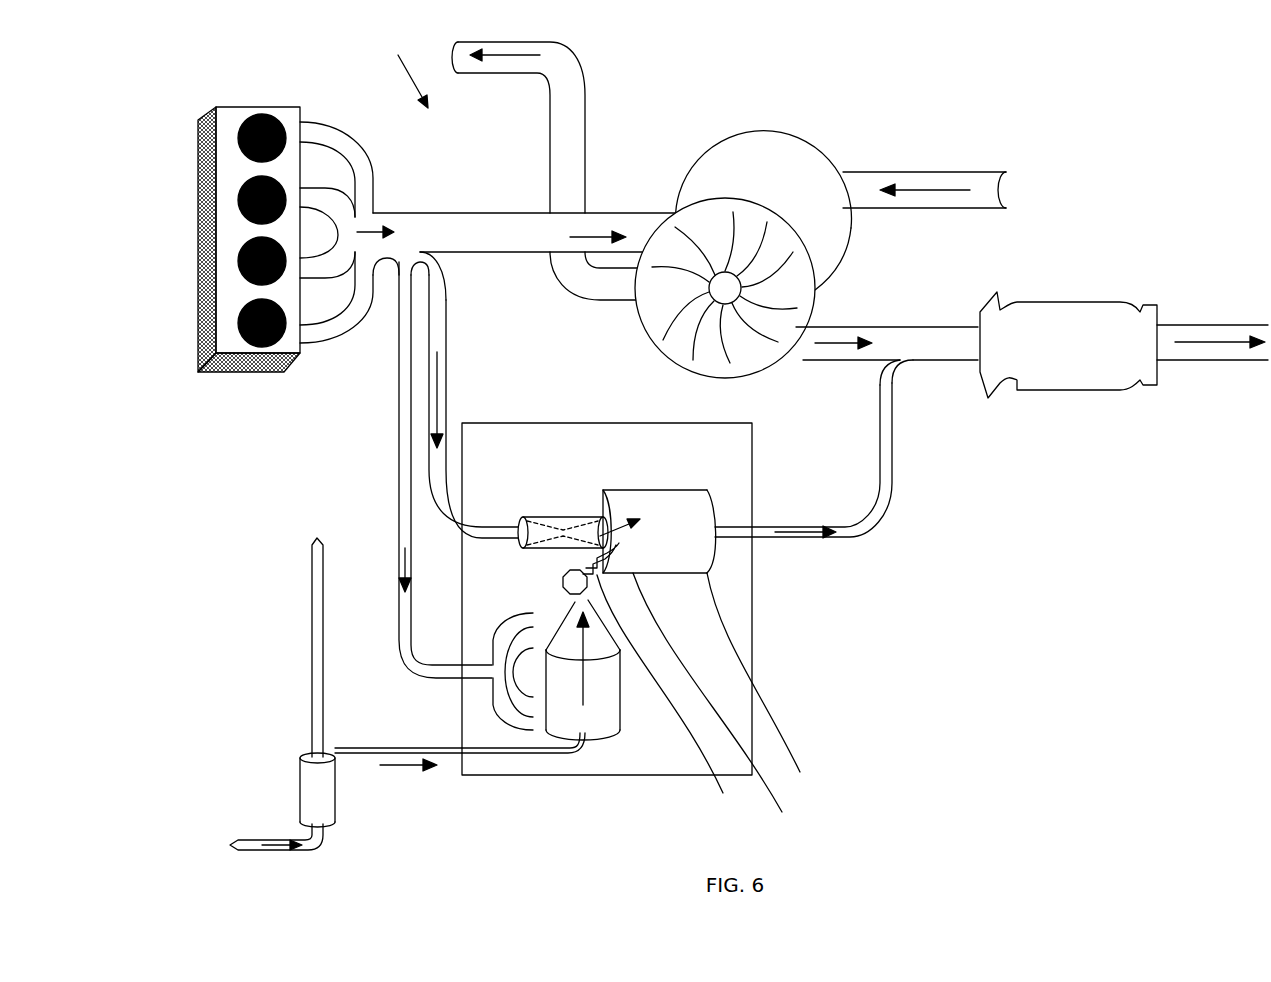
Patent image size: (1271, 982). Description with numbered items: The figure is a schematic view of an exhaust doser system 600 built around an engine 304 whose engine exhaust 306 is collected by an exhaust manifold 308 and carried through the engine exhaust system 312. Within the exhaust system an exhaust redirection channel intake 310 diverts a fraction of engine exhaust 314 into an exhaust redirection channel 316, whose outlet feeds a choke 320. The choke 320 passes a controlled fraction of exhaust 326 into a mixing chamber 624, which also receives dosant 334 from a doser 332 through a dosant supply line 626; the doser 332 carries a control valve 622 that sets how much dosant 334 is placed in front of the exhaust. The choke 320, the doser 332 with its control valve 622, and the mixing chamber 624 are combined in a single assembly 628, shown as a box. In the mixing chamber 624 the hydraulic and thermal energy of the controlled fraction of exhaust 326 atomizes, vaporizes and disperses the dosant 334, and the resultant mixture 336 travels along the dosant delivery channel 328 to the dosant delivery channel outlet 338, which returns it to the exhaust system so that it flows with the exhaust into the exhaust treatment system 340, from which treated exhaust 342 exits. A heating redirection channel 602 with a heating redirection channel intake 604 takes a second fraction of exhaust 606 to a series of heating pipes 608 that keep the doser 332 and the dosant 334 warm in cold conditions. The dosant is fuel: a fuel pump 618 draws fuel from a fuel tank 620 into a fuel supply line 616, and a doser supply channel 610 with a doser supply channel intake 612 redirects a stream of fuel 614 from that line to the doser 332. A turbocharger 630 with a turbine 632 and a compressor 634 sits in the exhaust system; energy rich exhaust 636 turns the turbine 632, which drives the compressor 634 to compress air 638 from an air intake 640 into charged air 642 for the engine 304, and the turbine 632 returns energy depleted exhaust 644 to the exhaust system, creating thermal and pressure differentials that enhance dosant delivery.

The engine 304 is at (253, 374).
The engine exhaust 306 is at (373, 205).
The exhaust manifold 308 is at (333, 347).
The exhaust redirection channel intake 310 is at (418, 262).
The engine exhaust system 312 is at (947, 327).
The fraction of engine exhaust 314 is at (438, 353).
The exhaust redirection channel 316 is at (447, 325).
The choke 320 is at (518, 517).
The controlled fraction of exhaust 326 is at (699, 666).
The dosant delivery channel 328 is at (843, 538).
The doser 332 is at (613, 733).
The dosant 334 is at (580, 706).
The resultant mixture 336 is at (773, 538).
The dosant delivery channel outlet 338 is at (905, 366).
The exhaust treatment system 340 is at (1080, 390).
The treated exhaust 342 is at (1225, 342).
The exhaust doser system 600 is at (395, 70).
The heating redirection channel 602 is at (398, 465).
The heating redirection channel intake 604 is at (399, 265).
The second fraction of exhaust 606 is at (399, 507).
The heating pipes 608 is at (472, 717).
The doser supply channel 610 is at (462, 775).
The doser supply channel intake 612 is at (338, 752).
The stream of fuel 614 is at (393, 764).
The fuel supply line 616 is at (312, 608).
The fuel pump 618 is at (300, 758).
The fuel tank 620 is at (262, 842).
The control valve 622 is at (563, 577).
The mixing chamber 624 is at (769, 685).
The dosant supply line 626 is at (676, 698).
The single assembly 628 is at (590, 479).
The turbocharger 630 is at (749, 188).
The turbine 632 is at (650, 340).
The compressor 634 is at (850, 240).
The energy rich exhaust 636 is at (606, 233).
The air 638 is at (928, 182).
The air intake 640 is at (999, 172).
The charged air 642 is at (553, 45).
The energy depleted exhaust 644 is at (826, 362).